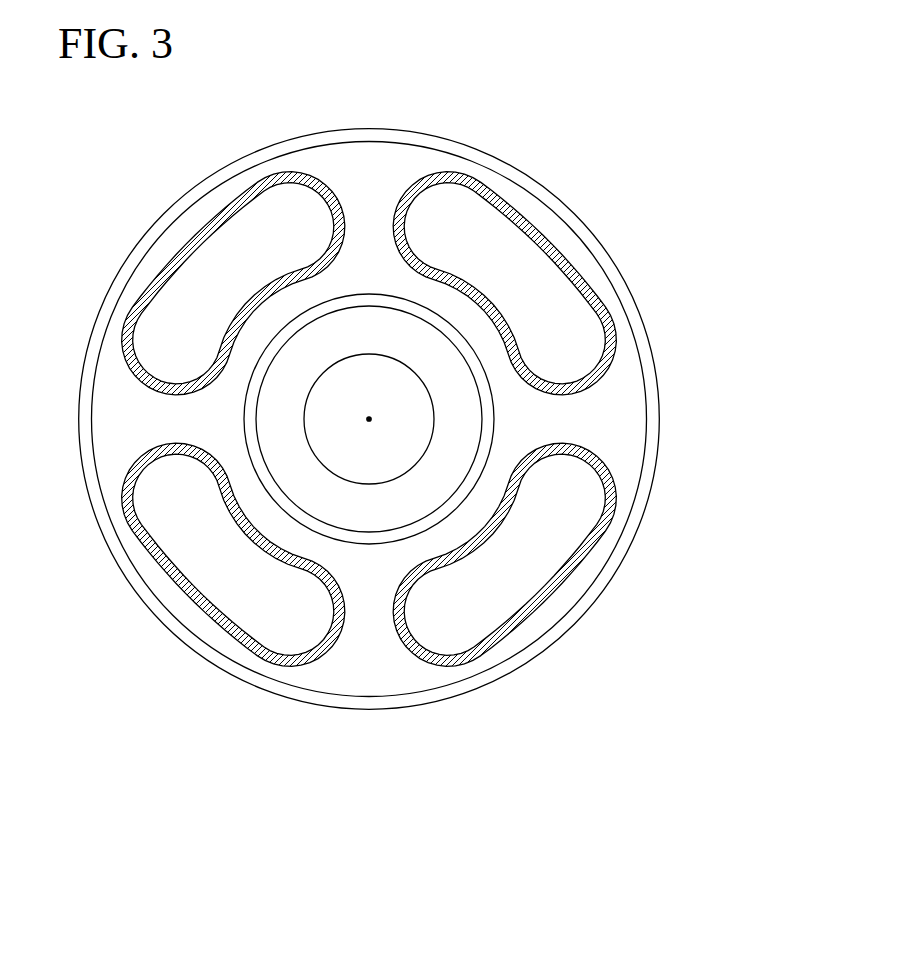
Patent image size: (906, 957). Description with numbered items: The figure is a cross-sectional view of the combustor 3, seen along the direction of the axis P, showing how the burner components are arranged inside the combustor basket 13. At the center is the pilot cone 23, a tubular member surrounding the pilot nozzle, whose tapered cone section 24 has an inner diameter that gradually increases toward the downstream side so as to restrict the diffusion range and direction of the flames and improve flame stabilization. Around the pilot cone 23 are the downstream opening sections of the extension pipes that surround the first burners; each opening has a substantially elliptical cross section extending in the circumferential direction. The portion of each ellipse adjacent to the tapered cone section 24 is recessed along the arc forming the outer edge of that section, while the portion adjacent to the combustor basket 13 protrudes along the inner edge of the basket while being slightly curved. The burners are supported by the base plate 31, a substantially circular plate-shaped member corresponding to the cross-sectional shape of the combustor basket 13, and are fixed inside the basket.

The combustor 3 is at (637, 162).
The combustor basket 13 is at (652, 356).
The pilot cone 23 is at (369, 528).
The tapered cone section 24 is at (362, 537).
The base plate 31 is at (627, 449).
The axis P is at (371, 417).